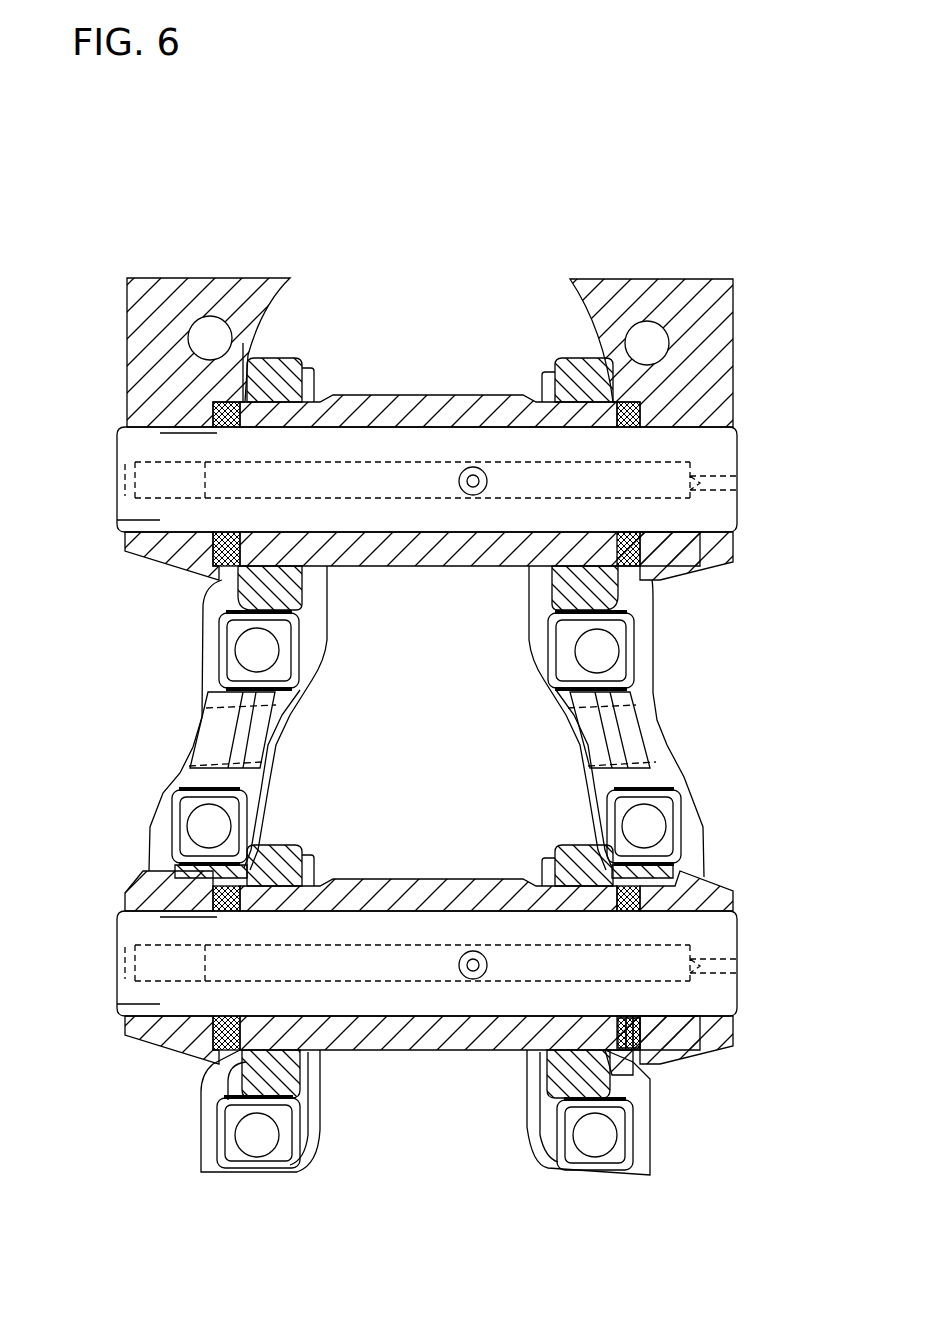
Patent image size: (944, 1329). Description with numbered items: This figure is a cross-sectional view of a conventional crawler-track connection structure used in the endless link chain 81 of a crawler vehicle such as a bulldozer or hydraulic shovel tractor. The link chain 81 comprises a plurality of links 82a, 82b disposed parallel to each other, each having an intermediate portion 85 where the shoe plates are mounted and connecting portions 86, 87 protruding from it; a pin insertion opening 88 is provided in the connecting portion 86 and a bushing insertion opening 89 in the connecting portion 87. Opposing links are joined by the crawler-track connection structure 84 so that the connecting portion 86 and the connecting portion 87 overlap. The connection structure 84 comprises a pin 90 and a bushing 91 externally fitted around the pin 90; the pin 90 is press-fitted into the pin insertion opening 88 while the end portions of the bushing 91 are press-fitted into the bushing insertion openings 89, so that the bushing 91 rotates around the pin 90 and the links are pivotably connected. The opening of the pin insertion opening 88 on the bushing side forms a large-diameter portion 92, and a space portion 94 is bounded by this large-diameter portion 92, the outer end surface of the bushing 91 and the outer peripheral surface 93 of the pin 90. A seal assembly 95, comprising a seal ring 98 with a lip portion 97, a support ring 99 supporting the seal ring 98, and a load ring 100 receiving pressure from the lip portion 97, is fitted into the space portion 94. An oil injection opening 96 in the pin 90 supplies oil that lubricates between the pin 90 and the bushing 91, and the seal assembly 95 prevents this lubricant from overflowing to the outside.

The endless link chain 81 is at (745, 351).
The link 82a is at (273, 307).
The link 82b is at (580, 307).
The crawler-track connection structure 84 is at (466, 388).
The intermediate portion 85 is at (202, 657).
The connecting portion 86 is at (243, 344).
The connecting portion 87 is at (313, 378).
The pin insertion opening 88 is at (117, 526).
The bushing insertion opening 89 is at (348, 582).
The pin 90 is at (415, 412).
The bushing 91 is at (475, 578).
The large-diameter portion 92 is at (143, 882).
The outer peripheral surface 93 is at (489, 895).
The space portion 94 is at (122, 432).
The seal assembly 95 is at (652, 408).
The oil injection opening 96 is at (418, 500).
The lip portion 97 is at (617, 1027).
The seal ring 98 is at (625, 1025).
The support ring 99 is at (640, 1037).
The load ring 100 is at (640, 1052).